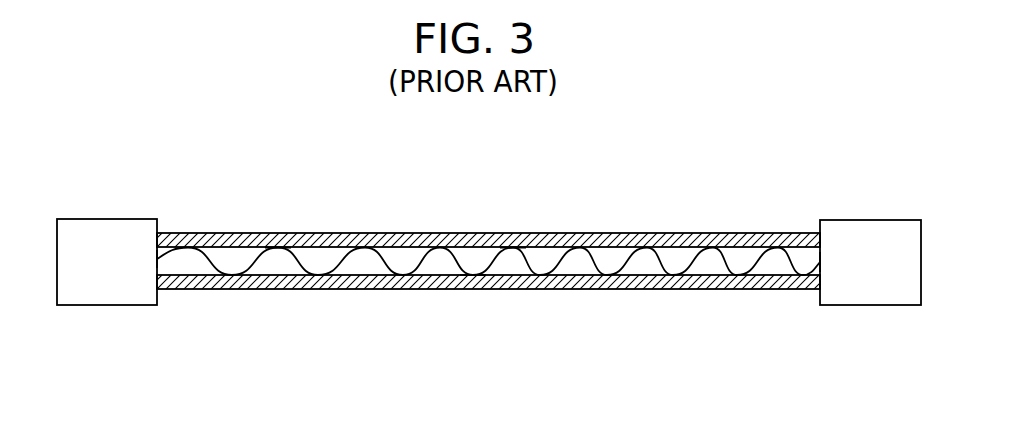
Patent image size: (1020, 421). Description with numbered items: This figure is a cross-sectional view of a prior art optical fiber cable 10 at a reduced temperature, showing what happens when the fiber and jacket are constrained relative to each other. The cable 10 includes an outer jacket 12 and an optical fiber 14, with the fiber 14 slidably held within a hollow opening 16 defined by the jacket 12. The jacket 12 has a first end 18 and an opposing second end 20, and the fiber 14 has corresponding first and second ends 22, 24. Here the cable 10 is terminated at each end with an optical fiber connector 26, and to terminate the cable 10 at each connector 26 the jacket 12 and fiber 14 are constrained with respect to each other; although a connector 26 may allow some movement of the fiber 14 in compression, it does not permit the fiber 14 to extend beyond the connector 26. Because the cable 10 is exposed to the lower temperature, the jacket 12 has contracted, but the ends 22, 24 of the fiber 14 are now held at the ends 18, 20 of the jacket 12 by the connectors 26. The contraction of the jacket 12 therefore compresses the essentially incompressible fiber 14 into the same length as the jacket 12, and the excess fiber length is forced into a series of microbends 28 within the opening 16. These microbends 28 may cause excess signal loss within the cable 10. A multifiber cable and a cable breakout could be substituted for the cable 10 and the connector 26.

The optical fiber cable 10 is at (415, 190).
The outer jacket 12 is at (683, 242).
The optical fiber 14 is at (693, 265).
The hollow opening 16 is at (573, 265).
The first end 18 is at (157, 242).
The second end 20 is at (820, 235).
The first end 22 is at (157, 258).
The second end 24 is at (820, 265).
The optical fiber connector 26 is at (117, 275).
The microbends 28 is at (263, 238).